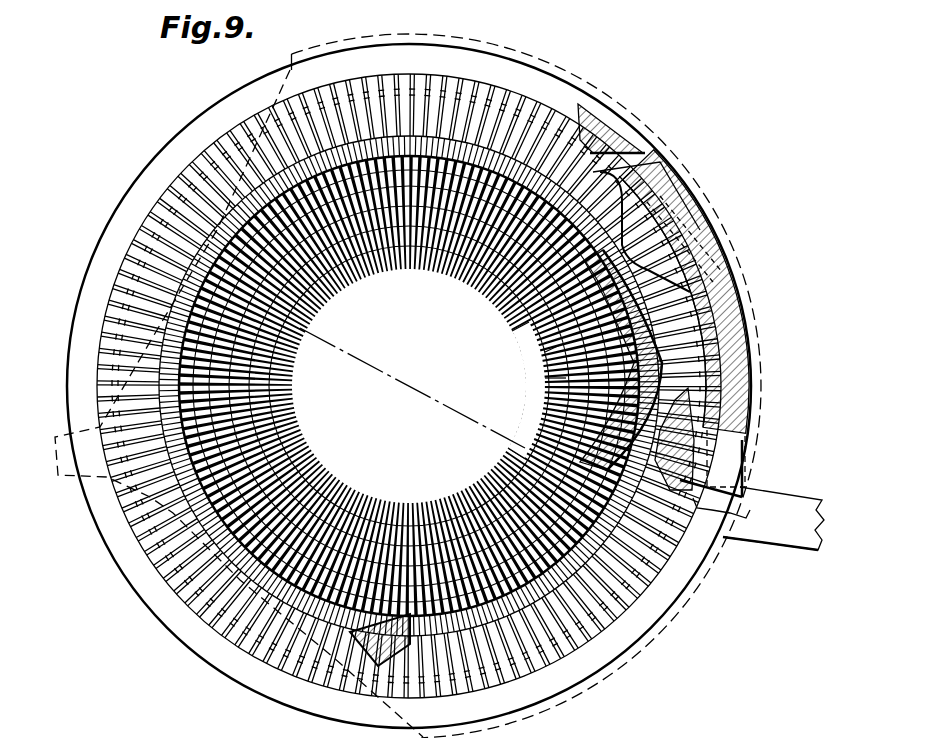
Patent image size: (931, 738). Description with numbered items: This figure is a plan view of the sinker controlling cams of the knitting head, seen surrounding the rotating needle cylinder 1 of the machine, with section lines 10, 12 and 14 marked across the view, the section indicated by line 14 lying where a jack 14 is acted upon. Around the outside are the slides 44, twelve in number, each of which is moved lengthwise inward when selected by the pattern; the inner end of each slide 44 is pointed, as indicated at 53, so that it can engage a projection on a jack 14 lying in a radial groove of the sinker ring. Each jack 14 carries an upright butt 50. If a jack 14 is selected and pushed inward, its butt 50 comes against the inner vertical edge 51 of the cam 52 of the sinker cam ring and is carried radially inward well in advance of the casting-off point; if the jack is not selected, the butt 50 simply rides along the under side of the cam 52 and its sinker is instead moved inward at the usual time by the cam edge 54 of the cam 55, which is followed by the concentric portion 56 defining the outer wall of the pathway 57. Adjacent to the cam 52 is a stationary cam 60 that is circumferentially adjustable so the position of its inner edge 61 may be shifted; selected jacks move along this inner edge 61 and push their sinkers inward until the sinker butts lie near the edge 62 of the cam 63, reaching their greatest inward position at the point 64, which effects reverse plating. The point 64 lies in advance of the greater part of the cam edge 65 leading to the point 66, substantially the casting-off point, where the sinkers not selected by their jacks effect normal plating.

The needle cylinder 1 is at (288, 364).
The line 10- 10 is at (418, 386).
The line 12- 12 is at (558, 380).
The jack 14 is at (624, 289).
The slide 44 is at (795, 542).
The upright butt 50 is at (130, 512).
The inner vertical edge 51 is at (712, 362).
The cam 52 is at (722, 392).
The pointed inner end 53 is at (742, 512).
The cam edge 54 is at (700, 252).
The cam 55 is at (598, 120).
The concentric portion 56 is at (470, 140).
The pathway 57 is at (403, 165).
The cam 60 is at (722, 286).
The inner edge 61 is at (705, 270).
The edge 62 is at (562, 350).
The cam 63 is at (565, 378).
The point 64 is at (520, 306).
The cam edge 65 is at (645, 210).
The point 66 is at (636, 192).